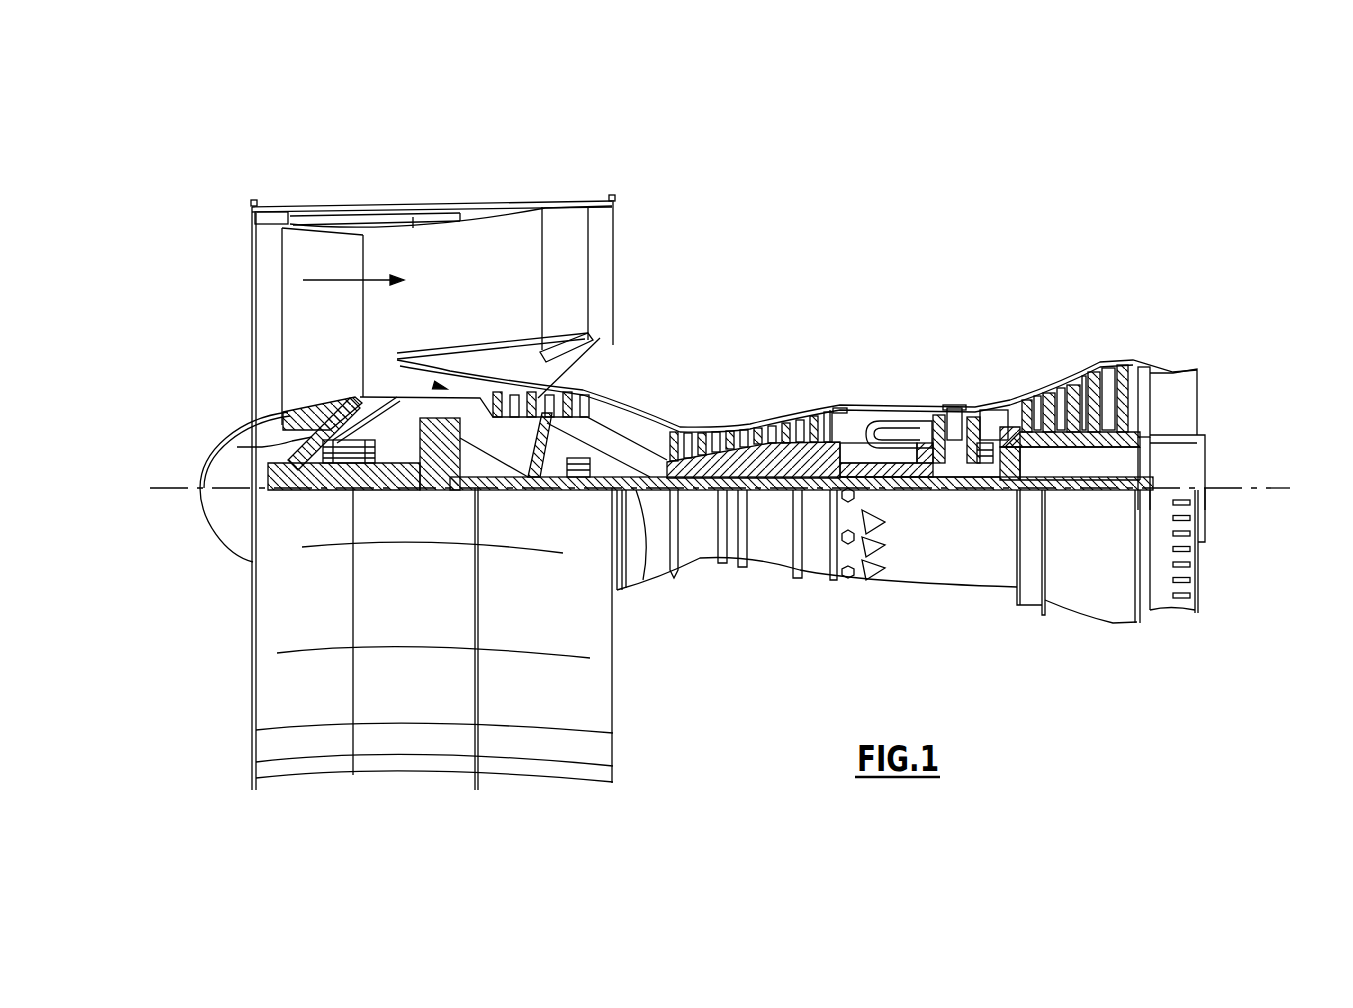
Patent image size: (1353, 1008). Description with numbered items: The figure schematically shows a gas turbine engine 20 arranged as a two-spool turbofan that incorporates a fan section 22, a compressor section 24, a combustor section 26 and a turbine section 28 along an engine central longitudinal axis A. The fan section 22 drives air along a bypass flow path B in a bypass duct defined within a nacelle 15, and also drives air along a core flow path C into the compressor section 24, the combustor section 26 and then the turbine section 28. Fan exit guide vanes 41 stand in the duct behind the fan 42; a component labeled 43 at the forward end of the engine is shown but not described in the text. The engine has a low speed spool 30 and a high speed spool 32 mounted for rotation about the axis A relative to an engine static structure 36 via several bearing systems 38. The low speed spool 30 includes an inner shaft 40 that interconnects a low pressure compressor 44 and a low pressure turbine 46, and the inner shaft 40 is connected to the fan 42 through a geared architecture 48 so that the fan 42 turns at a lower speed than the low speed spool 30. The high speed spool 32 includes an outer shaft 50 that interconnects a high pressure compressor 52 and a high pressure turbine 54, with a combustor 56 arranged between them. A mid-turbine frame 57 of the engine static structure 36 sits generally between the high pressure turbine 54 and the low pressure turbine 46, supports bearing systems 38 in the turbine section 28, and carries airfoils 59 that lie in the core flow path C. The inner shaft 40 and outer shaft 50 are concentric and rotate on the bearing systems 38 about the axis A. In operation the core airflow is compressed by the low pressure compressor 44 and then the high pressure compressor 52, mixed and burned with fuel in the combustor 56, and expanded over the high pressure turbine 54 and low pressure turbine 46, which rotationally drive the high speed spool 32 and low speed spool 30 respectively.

The gas turbine engine 20 is at (898, 252).
The fan section 22 is at (362, 192).
The nacelle 15 is at (435, 208).
The fan exit guide vanes 41 is at (588, 273).
The fan 42 is at (337, 335).
The nose cone / spinner 43 is at (237, 447).
The low pressure compressor 44 is at (600, 338).
The compressor section 24 is at (668, 385).
The high pressure compressor 52 is at (752, 462).
The combustor section 26 is at (888, 376).
The high speed spool 32 is at (818, 410).
The combustor 56 is at (887, 430).
The high pressure turbine 54 is at (953, 408).
The mid-turbine frame 57 is at (1001, 388).
The turbine section 28 is at (1040, 336).
The low pressure turbine 46 is at (1083, 372).
The airfoils 59 is at (1020, 453).
The bearing systems 38 is at (578, 470).
The geared architecture 48 is at (442, 473).
The outer shaft 50 is at (890, 463).
The low speed spool 30 is at (772, 503).
The inner shaft 40 is at (643, 580).
The engine static structure 36 is at (813, 591).
The engine central longitudinal axis A is at (1290, 488).
The bypass flow path B is at (337, 280).
The core flow path C is at (436, 385).